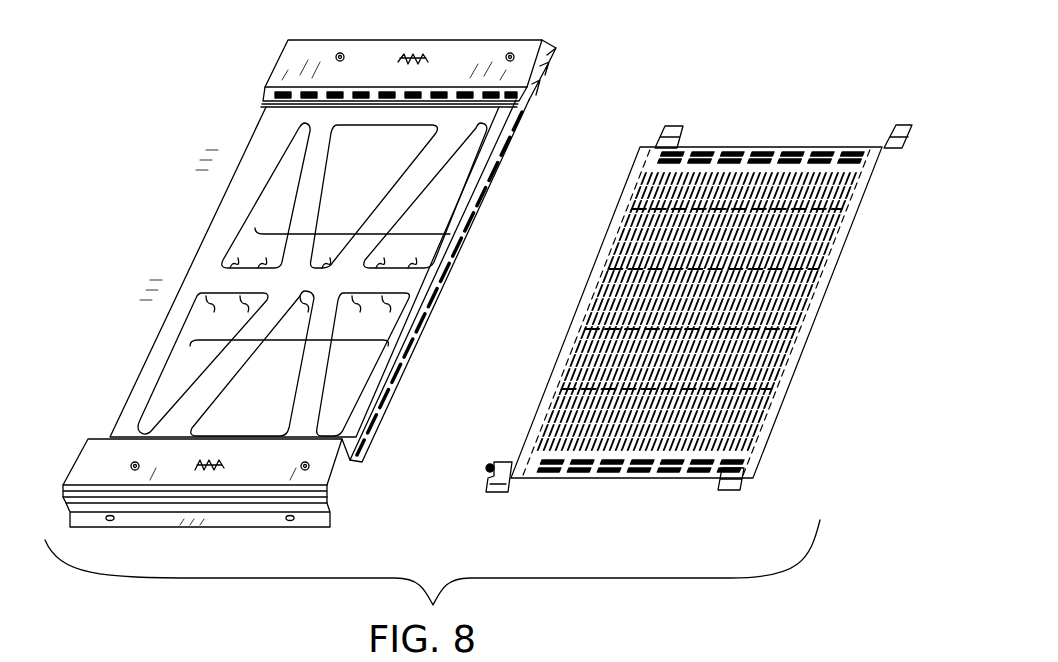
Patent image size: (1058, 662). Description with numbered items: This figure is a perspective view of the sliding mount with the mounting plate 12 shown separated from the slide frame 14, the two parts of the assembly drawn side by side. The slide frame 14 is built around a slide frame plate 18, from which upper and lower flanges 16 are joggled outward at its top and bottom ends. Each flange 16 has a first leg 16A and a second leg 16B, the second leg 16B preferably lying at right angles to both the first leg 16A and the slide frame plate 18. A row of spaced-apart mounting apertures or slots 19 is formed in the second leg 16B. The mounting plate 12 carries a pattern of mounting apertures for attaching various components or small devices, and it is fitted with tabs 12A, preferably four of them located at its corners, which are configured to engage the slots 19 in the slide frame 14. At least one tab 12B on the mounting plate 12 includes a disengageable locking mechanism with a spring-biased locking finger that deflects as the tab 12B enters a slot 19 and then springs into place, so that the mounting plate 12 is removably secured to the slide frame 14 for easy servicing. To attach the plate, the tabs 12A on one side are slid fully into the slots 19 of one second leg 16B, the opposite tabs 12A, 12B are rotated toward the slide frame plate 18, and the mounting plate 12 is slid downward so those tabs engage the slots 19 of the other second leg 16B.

The mounting plate 12 is at (815, 338).
The tabs 12A is at (681, 131).
The tab with locking mechanism 12B is at (487, 468).
The slide frame 14 is at (181, 229).
The upper and lower flanges 16 is at (247, 467).
The first leg 16A is at (462, 58).
The second leg 16B is at (503, 100).
The slide frame plate 18 is at (143, 386).
The mounting apertures or slots 19 is at (307, 97).